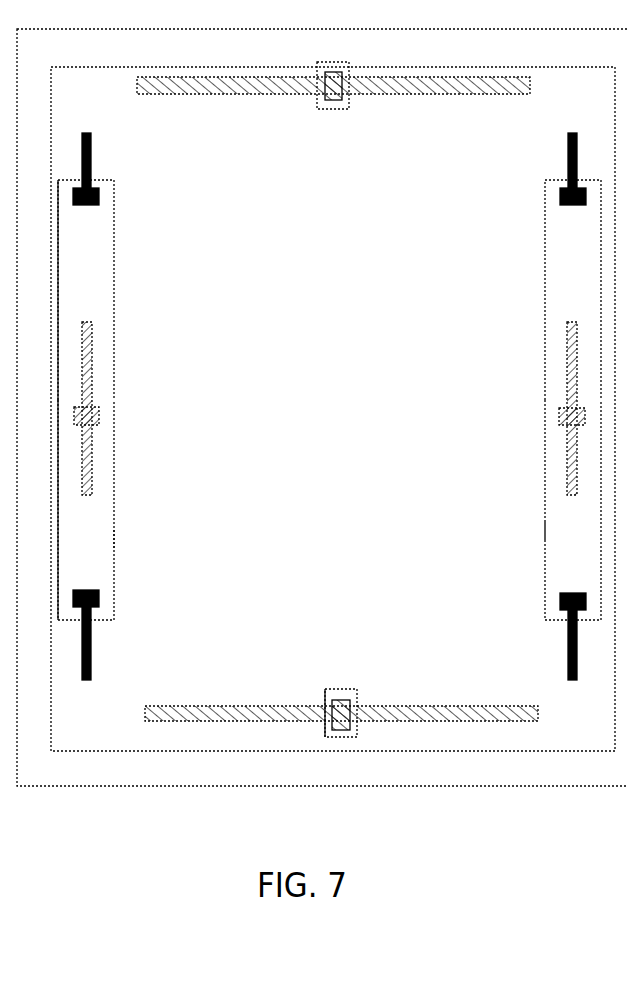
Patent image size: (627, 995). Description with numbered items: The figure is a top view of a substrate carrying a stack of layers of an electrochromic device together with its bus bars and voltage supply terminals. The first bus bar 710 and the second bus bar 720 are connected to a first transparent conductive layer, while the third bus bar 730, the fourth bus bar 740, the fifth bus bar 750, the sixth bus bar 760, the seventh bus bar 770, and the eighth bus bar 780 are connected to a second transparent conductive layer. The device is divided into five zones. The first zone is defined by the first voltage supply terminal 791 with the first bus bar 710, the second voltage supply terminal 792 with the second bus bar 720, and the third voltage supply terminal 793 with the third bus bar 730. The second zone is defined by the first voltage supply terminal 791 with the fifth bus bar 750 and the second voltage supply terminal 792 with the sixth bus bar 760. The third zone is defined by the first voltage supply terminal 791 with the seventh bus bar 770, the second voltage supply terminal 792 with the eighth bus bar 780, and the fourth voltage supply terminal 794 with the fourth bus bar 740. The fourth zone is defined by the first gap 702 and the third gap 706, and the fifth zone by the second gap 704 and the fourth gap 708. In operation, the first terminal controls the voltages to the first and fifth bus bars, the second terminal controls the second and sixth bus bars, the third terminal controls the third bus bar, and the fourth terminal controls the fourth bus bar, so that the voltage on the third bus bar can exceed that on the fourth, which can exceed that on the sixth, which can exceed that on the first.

The first gap 702 is at (98, 260).
The second gap 704 is at (95, 560).
The third gap 706 is at (561, 252).
The fourth gap 708 is at (561, 552).
The first bus bar 710 is at (102, 157).
The second bus bar 720 is at (550, 157).
The third bus bar 730 is at (228, 108).
The fourth bus bar 740 is at (422, 688).
The fifth bus bar 750 is at (99, 375).
The sixth bus bar 760 is at (551, 368).
The seventh bus bar 770 is at (96, 647).
The eighth bus bar 780 is at (561, 637).
The first voltage supply terminal 791 is at (108, 540).
The second voltage supply terminal 792 is at (566, 532).
The third voltage supply terminal 793 is at (338, 100).
The fourth voltage supply terminal 794 is at (338, 700).